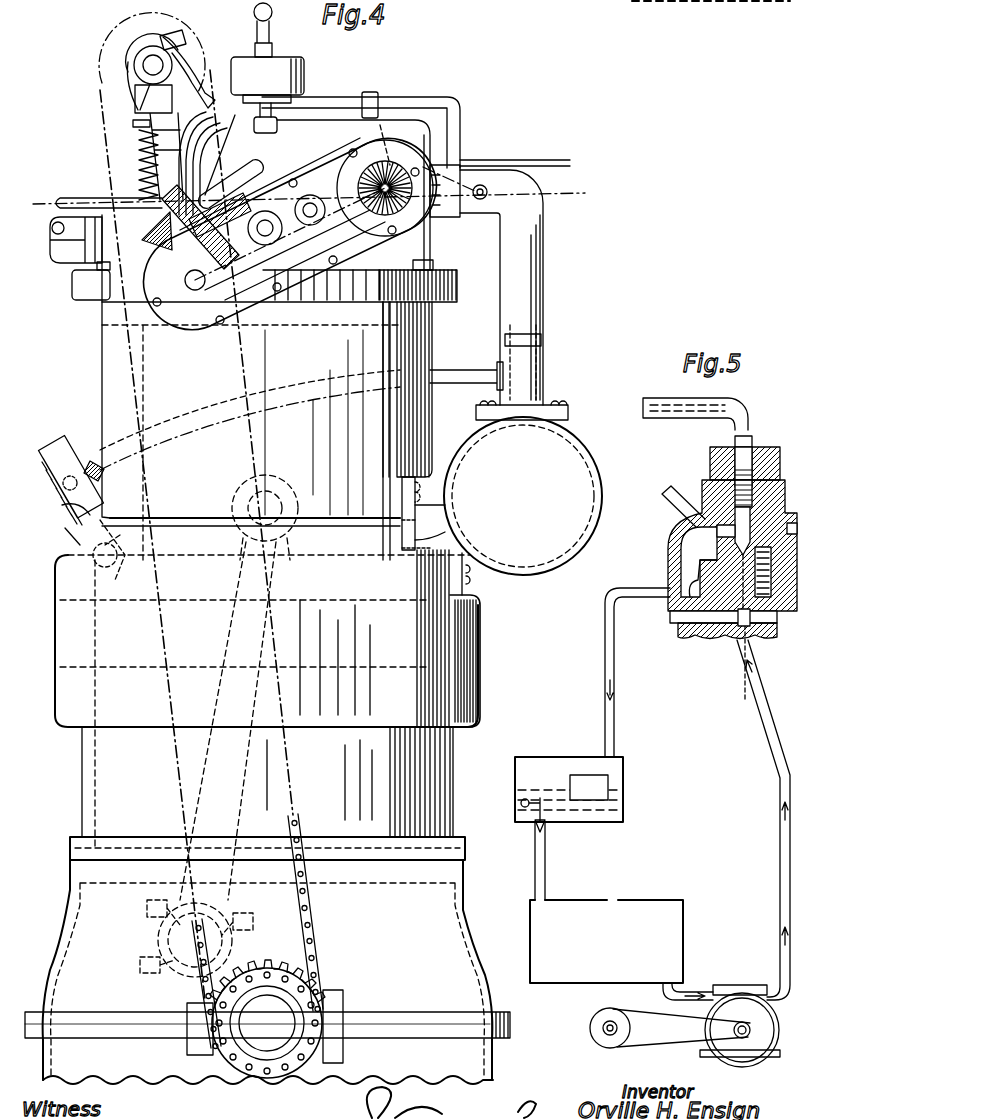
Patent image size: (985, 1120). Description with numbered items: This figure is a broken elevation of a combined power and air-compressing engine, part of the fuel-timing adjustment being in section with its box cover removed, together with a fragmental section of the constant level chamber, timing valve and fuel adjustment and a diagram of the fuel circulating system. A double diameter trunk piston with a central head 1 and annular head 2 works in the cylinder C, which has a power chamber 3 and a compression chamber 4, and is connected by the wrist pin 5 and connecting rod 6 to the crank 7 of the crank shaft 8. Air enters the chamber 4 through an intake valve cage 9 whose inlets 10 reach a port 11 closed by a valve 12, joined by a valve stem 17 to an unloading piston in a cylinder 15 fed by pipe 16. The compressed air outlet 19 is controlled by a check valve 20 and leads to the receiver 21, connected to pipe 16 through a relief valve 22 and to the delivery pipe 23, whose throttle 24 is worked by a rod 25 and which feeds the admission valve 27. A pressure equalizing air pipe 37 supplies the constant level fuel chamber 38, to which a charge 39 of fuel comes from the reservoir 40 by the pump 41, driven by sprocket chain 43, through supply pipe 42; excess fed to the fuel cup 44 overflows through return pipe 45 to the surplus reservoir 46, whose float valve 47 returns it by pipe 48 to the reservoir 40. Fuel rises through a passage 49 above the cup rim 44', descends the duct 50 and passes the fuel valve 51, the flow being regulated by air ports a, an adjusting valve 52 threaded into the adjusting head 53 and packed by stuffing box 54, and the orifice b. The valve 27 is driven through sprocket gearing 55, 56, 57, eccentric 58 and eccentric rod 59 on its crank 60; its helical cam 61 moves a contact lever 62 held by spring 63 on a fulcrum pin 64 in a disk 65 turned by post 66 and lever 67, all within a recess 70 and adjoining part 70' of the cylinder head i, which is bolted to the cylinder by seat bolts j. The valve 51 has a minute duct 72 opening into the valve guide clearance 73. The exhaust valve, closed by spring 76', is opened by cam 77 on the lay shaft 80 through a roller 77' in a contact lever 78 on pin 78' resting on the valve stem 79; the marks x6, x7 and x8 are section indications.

In FIG. 4, the central head 1 is at (302, 336).
In FIG. 4, the annular head 2 is at (300, 598).
In FIG. 4, the power chamber 3 is at (420, 323).
In FIG. 4, the compression chamber 4 is at (105, 583).
In FIG. 4, the wrist pin 5 is at (280, 500).
In FIG. 4, the connecting rod 6 is at (222, 632).
In FIG. 4, the crank 7 is at (185, 975).
In FIG. 4, the crank shaft 8 is at (265, 1035).
In FIG. 5, the crank shaft 8 is at (597, 1035).
In FIG. 4, the intake valve cage 9 is at (63, 414).
In FIG. 4, the inlets 10 is at (62, 520).
In FIG. 4, the port 11 is at (72, 548).
In FIG. 4, the valve 12 is at (110, 568).
In FIG. 4, the cylinder 15 is at (55, 492).
In FIG. 4, the pipe 16 is at (455, 385).
In FIG. 4, the valve stem 17 is at (112, 518).
In FIG. 4, the compressed air outlet 19 is at (400, 552).
In FIG. 4, the check valve 20 is at (445, 545).
In FIG. 4, the compressed air receiver 21 is at (523, 488).
In FIG. 4, the relief valve 22 is at (540, 355).
In FIG. 4, the compressed air delivery pipe 23 is at (546, 268).
In FIG. 4, the throttle 24 is at (480, 200).
In FIG. 4, the rod 25 is at (540, 163).
In FIG. 4, the admission valve 27 is at (415, 212).
In FIG. 4, the pressure equalizing air pipe 37 is at (328, 97).
In FIG. 5, the pressure equalizing air pipe 37 is at (670, 500).
In FIG. 5, the constant level fuel chamber 38 is at (785, 512).
In FIG. 5, the charge of liquid fuel 39 is at (740, 612).
In FIG. 5, the fuel reservoir 40 is at (621, 950).
In FIG. 5, the pump 41 is at (740, 1000).
In FIG. 4, the supply pipe 42 is at (70, 197).
In FIG. 5, the supply pipe 42 is at (768, 735).
In FIG. 5, the sprocket chain 43 is at (665, 1048).
In FIG. 5, the fuel cup 44 is at (672, 562).
In FIG. 5, the cup rim 44' is at (676, 556).
In FIG. 4, the return pipe 45 is at (105, 198).
In FIG. 5, the return pipe 45 is at (622, 592).
In FIG. 5, the surplus reservoir 46 is at (624, 770).
In FIG. 5, the float valve 47 is at (535, 828).
In FIG. 5, the pipe 48 is at (548, 872).
In FIG. 5, the passage 49 is at (772, 560).
In FIG. 5, the fuel duct 50 is at (772, 585).
In FIG. 4, the fuel valve 51 is at (235, 245).
In FIG. 5, the fuel valve 51 is at (678, 622).
In FIG. 4, the adjusting valve 52 is at (275, 36).
In FIG. 5, the adjusting valve 52 is at (660, 405).
In FIG. 4, the adjusting head 53 is at (267, 98).
In FIG. 5, the adjusting head 53 is at (718, 492).
In FIG. 4, the stuffing box 54 is at (288, 62).
In FIG. 5, the stuffing box 54 is at (770, 450).
In FIG. 4, the sprocket gearing 55 is at (268, 968).
In FIG. 4, the sprocket gearing 56 is at (250, 430).
In FIG. 4, the sprocket gearing 57 is at (135, 110).
In FIG. 4, the eccentric 58 is at (165, 20).
In FIG. 4, the eccentric rod 59 is at (215, 110).
In FIG. 4, the crank 60 is at (392, 140).
In FIG. 4, the helical cam 61 is at (362, 236).
In FIG. 4, the contact lever 62 is at (360, 215).
In FIG. 4, the spring 63 is at (312, 226).
In FIG. 4, the fulcrum pin 64 is at (225, 290).
In FIG. 4, the disk 65 is at (270, 244).
In FIG. 4, the post 66 is at (105, 240).
In FIG. 4, the lever 67 is at (252, 168).
In FIG. 4, the recess 70 is at (290, 233).
In FIG. 4, the housing cover 70' is at (270, 184).
In FIG. 5, the minute duct 72 is at (742, 655).
In FIG. 5, the valve guide clearance 73 is at (690, 640).
In FIG. 4, the spring 76' is at (108, 127).
In FIG. 4, the cam 77 is at (144, 66).
In FIG. 4, the roller 77' is at (108, 86).
In FIG. 4, the contact lever 78 is at (195, 36).
In FIG. 4, the pin 78' is at (226, 155).
In FIG. 4, the valve stem 79 is at (137, 165).
In FIG. 4, the lay shaft 80 is at (142, 62).
In FIG. 5, the air ports a is at (733, 528).
In FIG. 5, the orifice b is at (798, 531).
In FIG. 4, the cylinder C is at (196, 472).
In FIG. 4, the cylinder head i is at (340, 126).
In FIG. 4, the seat bolts j is at (100, 265).
In FIG. 4, the section line x6 is at (307, 196).
In FIG. 4, the section line x7 is at (300, 763).
In FIG. 4, the section line x8 is at (150, 280).